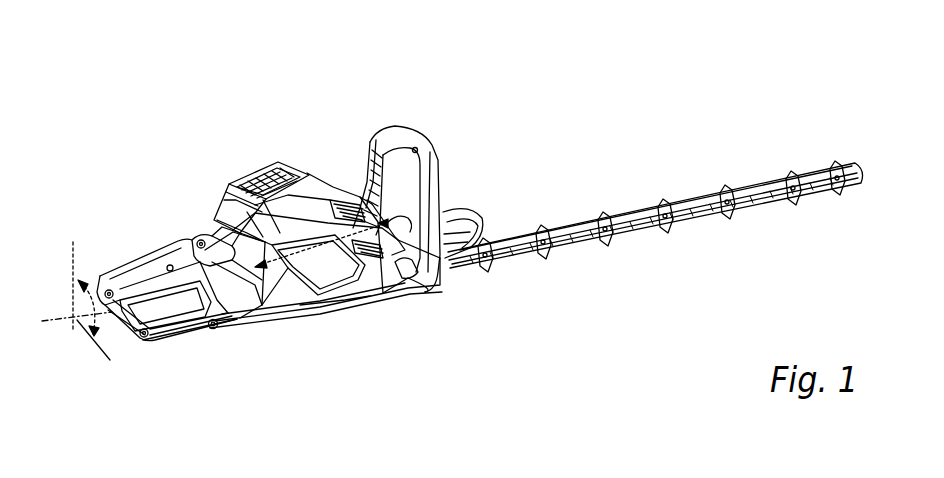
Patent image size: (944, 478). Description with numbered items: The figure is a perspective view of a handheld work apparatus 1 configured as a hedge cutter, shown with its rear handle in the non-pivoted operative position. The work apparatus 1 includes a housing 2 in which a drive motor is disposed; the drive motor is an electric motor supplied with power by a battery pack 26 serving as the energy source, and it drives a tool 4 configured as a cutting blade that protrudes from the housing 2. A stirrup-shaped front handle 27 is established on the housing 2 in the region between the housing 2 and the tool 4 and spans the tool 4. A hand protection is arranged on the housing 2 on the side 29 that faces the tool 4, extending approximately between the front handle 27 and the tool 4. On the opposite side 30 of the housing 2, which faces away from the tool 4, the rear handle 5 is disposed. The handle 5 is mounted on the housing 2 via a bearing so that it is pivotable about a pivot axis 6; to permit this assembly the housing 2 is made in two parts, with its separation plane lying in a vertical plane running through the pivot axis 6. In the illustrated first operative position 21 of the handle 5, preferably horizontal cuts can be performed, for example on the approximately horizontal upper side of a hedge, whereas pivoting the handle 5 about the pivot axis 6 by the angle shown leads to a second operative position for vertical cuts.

The handheld work apparatus 1 is at (181, 100).
The housing 2 is at (312, 320).
The tool 4 is at (660, 235).
The handle 5 is at (168, 343).
The pivot axis 6 is at (65, 317).
The first operative position 21 is at (281, 357).
The battery pack 26 is at (252, 170).
The front handle 27 is at (414, 130).
The side 29 is at (407, 278).
The side 30 is at (229, 322).